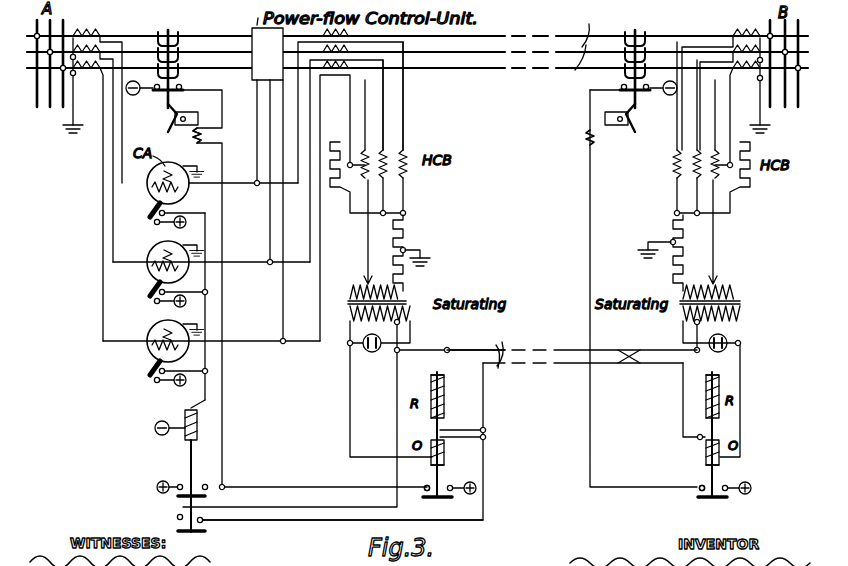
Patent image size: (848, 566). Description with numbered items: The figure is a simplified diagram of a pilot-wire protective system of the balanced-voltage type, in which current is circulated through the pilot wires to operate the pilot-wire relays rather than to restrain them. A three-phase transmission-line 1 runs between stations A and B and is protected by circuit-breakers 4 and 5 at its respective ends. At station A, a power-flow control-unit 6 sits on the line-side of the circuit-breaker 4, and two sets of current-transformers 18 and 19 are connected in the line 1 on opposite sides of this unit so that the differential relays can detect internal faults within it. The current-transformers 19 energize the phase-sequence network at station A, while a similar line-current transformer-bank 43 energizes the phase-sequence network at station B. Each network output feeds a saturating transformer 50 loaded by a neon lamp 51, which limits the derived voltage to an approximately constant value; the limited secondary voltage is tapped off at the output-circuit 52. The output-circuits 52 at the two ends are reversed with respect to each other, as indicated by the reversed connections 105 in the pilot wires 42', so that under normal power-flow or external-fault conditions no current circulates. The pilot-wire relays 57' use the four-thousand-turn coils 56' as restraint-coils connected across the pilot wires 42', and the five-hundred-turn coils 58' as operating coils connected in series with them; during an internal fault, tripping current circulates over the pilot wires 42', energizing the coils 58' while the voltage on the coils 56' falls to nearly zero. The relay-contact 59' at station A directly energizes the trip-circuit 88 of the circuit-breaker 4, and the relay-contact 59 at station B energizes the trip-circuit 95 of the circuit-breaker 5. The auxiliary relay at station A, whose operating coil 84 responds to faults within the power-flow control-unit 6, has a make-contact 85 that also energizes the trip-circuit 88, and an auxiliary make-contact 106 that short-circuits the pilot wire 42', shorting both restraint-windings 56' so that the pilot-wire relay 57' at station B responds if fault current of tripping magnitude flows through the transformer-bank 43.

The current-transformers 18 is at (97, 30).
The circuit-breaker 4 is at (176, 30).
The power-flow control-unit 6 is at (270, 62).
The current-transformers 19 is at (340, 96).
The transmission-line 1 is at (582, 39).
The circuit-breaker 5 is at (640, 30).
The line-current transformer-bank 43 is at (756, 30).
The trip-circuit 88 is at (217, 165).
The trip-circuit 95 is at (592, 190).
The saturating transformer 50 is at (412, 301).
The output-circuit 52 is at (406, 321).
The neon lamp 51 is at (366, 352).
The pilot-wire relay 57' is at (477, 439).
The pilot wires 42' is at (572, 351).
The reversed connections 105 is at (631, 364).
The restraint-coils 56' is at (575, 388).
The operating coils 58' is at (575, 460).
The relay-contact 59' is at (417, 480).
The relay-contact 59 is at (687, 479).
The operating coil 84 is at (198, 425).
The make-contact 85 is at (199, 484).
The auxiliary make-contact 106 is at (178, 517).